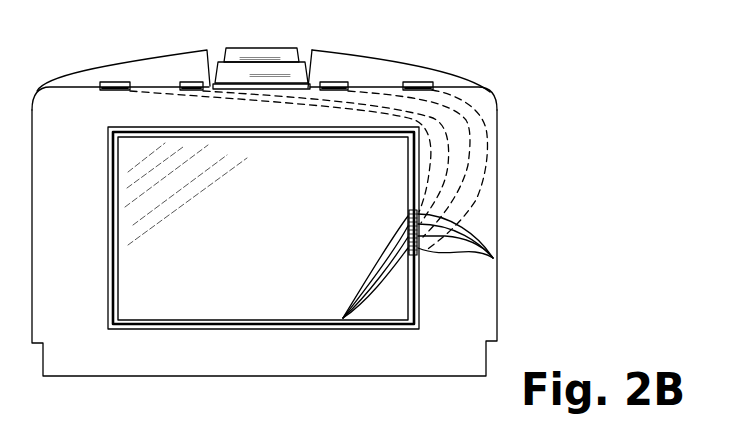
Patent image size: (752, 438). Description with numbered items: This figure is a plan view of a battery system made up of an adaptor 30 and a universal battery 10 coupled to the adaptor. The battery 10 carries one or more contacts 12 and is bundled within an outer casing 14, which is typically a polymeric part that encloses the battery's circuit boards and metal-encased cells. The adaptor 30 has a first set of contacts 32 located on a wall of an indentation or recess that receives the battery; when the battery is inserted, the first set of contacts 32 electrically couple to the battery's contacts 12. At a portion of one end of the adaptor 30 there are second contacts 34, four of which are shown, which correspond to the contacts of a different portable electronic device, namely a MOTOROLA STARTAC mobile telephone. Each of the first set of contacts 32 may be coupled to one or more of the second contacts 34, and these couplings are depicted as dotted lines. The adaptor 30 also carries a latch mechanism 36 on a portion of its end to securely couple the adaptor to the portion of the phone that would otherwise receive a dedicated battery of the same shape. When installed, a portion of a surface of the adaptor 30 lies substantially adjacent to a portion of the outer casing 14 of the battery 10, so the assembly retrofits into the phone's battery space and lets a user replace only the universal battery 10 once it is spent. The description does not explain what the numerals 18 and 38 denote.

The universal battery 10 is at (307, 217).
The contacts 12 is at (348, 324).
The outer casing 14 is at (270, 252).
The bottom portion 18 is at (408, 433).
The adaptor 30 is at (502, 222).
The first set of contacts 32 is at (493, 258).
The second contacts 34 is at (185, 82).
The latch mechanism 36 is at (262, 50).
The housing body 38 is at (70, 254).